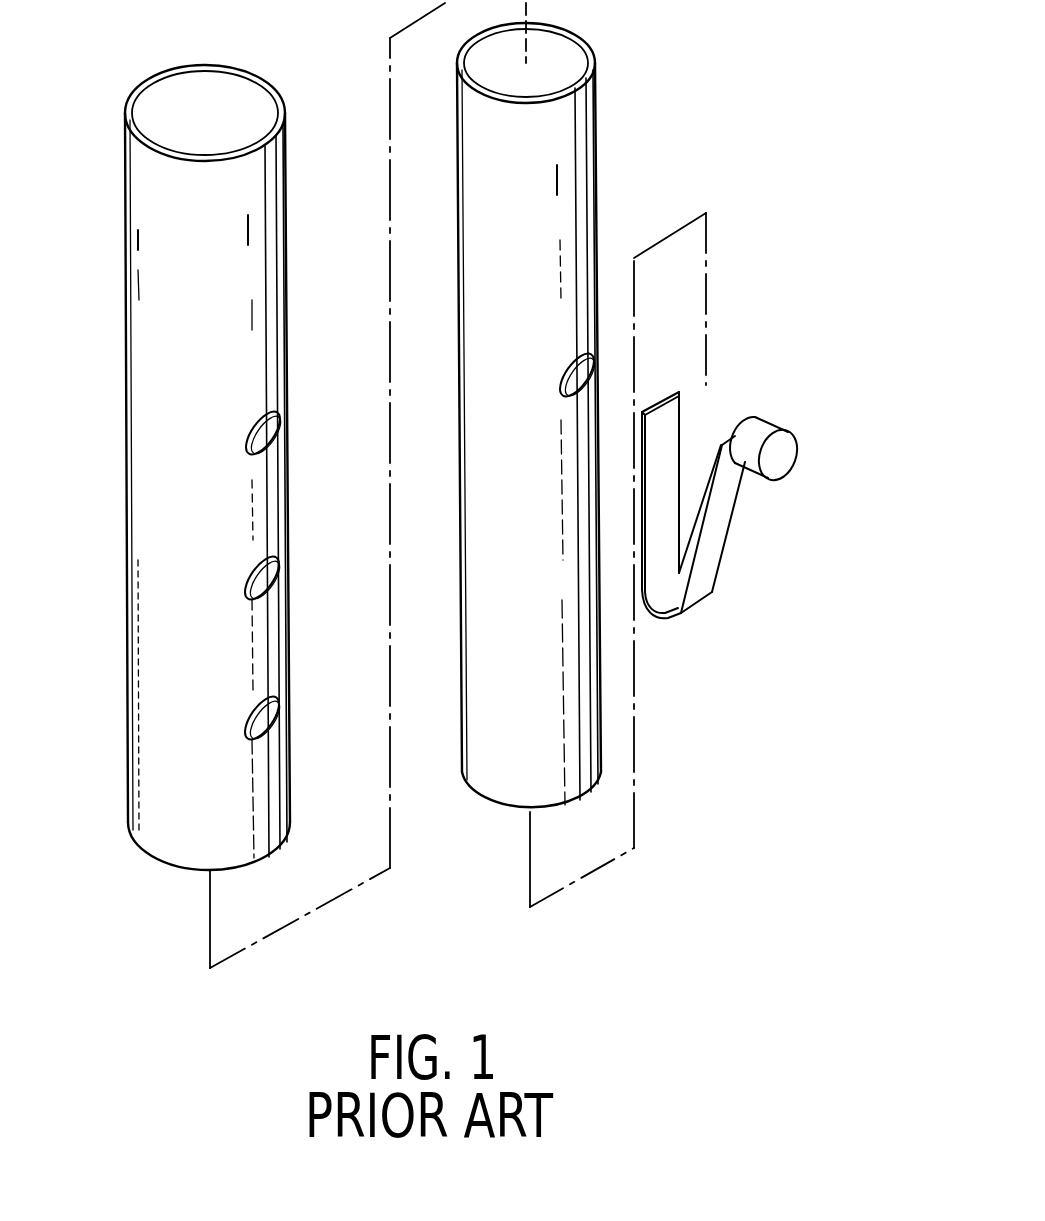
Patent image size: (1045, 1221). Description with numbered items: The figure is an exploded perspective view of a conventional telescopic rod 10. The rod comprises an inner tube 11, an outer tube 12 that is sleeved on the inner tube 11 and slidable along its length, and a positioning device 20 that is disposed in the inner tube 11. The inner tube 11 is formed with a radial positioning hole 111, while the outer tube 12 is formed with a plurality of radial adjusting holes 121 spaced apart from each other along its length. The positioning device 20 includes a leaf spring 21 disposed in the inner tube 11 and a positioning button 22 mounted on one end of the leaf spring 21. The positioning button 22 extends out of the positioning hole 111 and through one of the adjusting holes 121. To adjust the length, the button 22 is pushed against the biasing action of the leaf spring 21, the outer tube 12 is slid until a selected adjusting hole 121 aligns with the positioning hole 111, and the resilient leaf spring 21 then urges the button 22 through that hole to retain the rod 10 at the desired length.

The telescopic rod 10 is at (251, 535).
The outer tube 12 is at (137, 265).
The radial adjusting holes 121 is at (267, 432).
The inner tube 11 is at (628, 455).
The radial positioning hole 111 is at (580, 373).
The positioning device 20 is at (754, 503).
The leaf spring 21 is at (716, 523).
The positioning button 22 is at (780, 453).